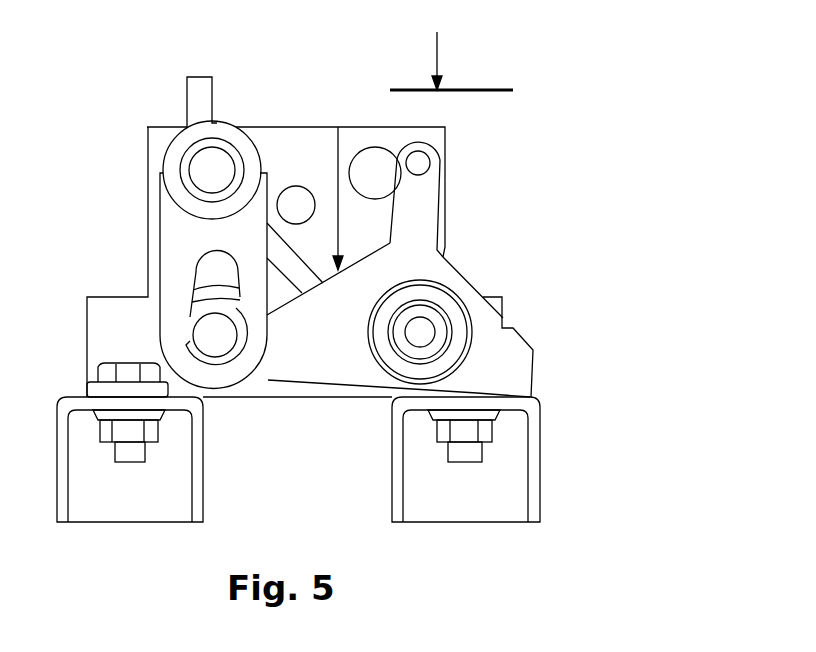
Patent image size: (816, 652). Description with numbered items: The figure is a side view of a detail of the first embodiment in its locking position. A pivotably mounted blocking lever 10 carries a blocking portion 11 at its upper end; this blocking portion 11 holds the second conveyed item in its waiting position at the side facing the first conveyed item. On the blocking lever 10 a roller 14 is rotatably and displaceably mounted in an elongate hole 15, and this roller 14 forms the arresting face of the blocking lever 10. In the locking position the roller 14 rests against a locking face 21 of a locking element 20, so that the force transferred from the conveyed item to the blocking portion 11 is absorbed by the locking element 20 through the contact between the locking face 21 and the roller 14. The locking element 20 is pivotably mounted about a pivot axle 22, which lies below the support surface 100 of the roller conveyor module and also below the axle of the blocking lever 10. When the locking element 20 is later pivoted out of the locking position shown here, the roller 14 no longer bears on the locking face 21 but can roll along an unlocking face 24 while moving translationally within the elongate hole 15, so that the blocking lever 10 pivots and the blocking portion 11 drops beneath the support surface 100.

The blocking lever 10 is at (180, 222).
The blocking portion 11 is at (200, 102).
The roller 14 is at (193, 273).
The elongate hole 15 is at (212, 335).
The locking element 20 is at (333, 367).
The locking face 21 is at (267, 377).
The pivot axle 22 is at (422, 332).
The unlocking face 24 is at (340, 136).
The support surface 100 is at (452, 88).